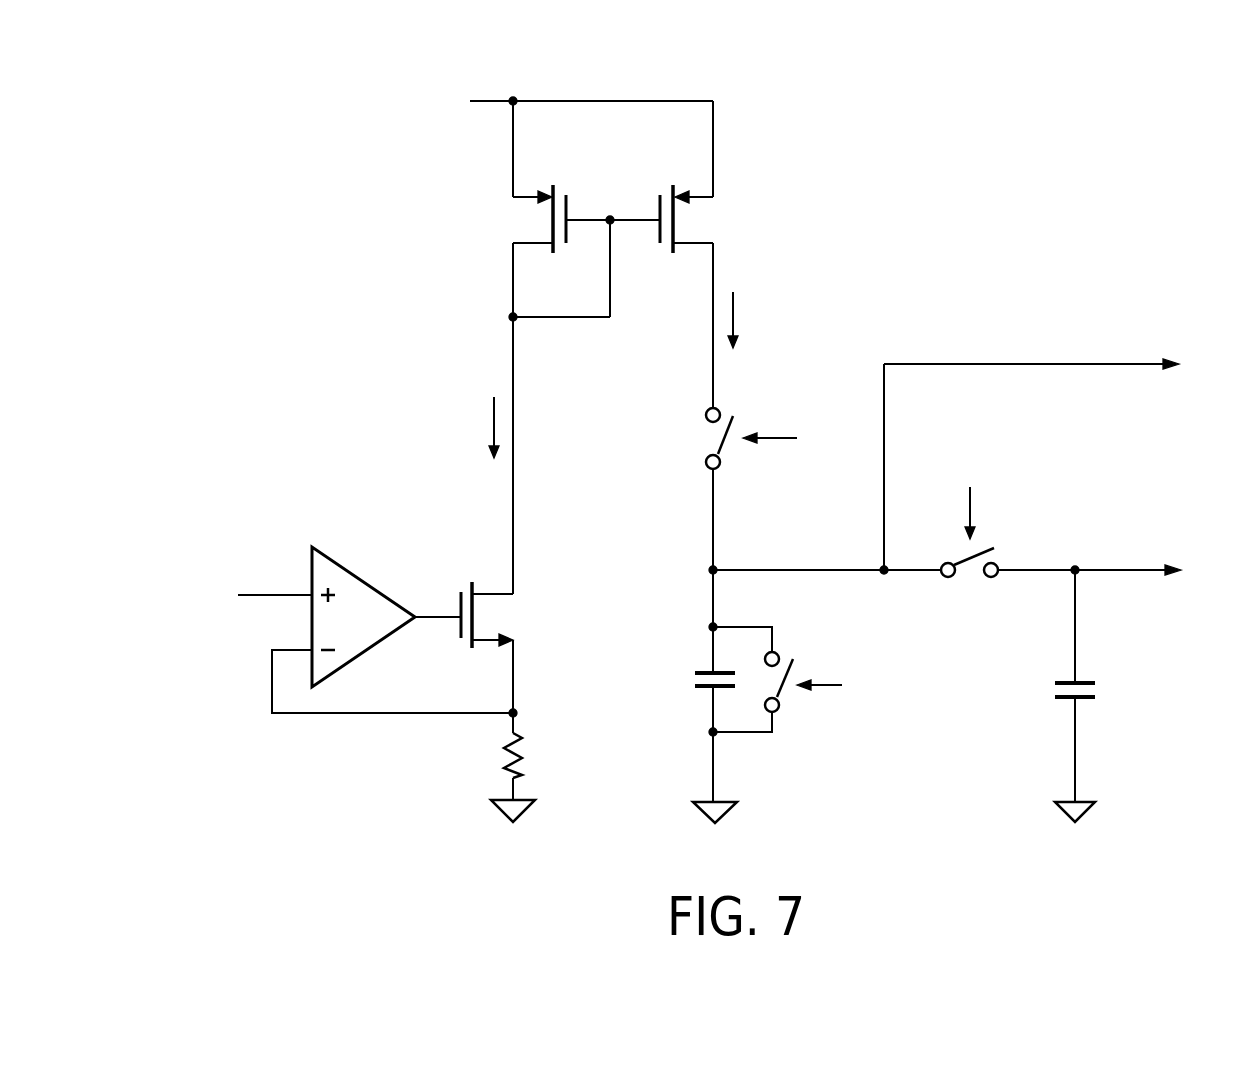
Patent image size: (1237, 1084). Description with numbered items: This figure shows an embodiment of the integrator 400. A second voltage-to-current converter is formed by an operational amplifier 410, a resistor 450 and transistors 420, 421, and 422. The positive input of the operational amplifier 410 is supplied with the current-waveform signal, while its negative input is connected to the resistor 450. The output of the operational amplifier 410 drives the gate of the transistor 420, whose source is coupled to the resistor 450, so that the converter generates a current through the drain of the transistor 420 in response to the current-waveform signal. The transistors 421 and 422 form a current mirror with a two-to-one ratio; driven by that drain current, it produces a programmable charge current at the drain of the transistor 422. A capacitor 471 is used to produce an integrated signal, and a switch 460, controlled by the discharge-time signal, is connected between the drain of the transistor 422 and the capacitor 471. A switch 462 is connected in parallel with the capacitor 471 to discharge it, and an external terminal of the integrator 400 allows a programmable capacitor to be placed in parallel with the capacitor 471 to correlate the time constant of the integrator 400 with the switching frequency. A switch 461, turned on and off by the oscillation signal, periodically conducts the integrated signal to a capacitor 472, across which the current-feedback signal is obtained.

The integrator 400 is at (1180, 135).
The operational amplifier 410 is at (365, 575).
The transistor 420 is at (517, 619).
The transistor 421 is at (510, 221).
The transistor 422 is at (715, 222).
The resistor 450 is at (533, 760).
The switch 460 is at (695, 438).
The switch 461 is at (967, 589).
The switch 462 is at (783, 715).
The capacitor 471 is at (688, 682).
The capacitor 472 is at (1100, 694).